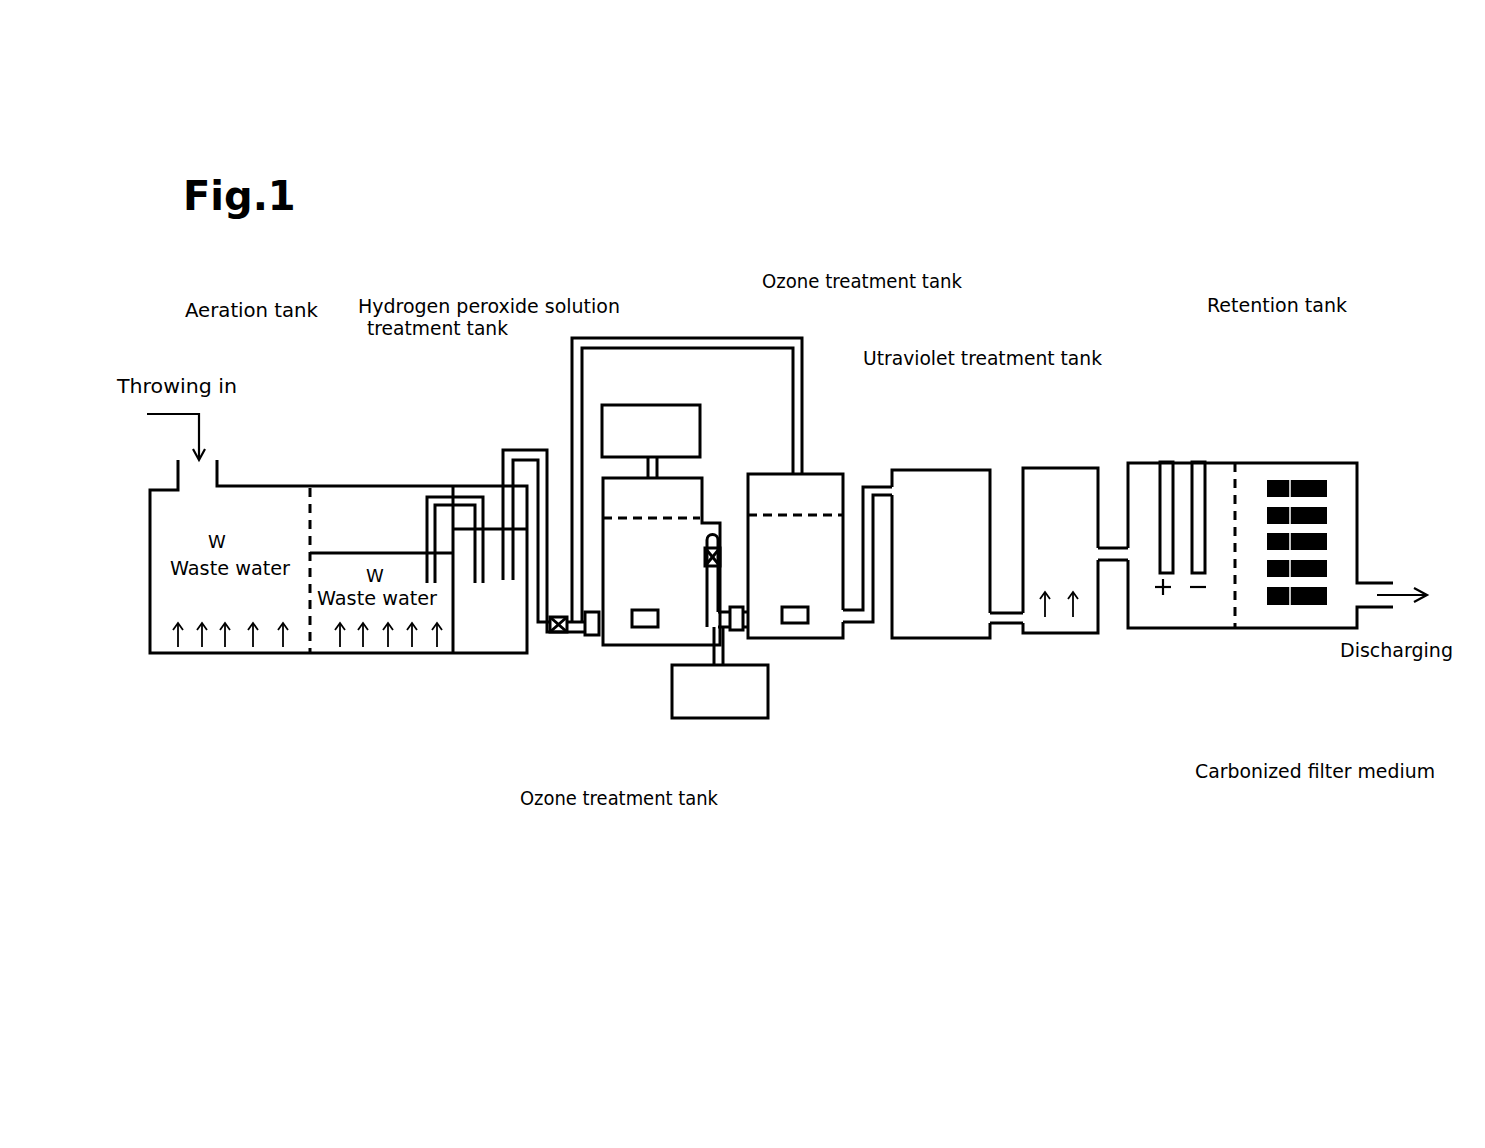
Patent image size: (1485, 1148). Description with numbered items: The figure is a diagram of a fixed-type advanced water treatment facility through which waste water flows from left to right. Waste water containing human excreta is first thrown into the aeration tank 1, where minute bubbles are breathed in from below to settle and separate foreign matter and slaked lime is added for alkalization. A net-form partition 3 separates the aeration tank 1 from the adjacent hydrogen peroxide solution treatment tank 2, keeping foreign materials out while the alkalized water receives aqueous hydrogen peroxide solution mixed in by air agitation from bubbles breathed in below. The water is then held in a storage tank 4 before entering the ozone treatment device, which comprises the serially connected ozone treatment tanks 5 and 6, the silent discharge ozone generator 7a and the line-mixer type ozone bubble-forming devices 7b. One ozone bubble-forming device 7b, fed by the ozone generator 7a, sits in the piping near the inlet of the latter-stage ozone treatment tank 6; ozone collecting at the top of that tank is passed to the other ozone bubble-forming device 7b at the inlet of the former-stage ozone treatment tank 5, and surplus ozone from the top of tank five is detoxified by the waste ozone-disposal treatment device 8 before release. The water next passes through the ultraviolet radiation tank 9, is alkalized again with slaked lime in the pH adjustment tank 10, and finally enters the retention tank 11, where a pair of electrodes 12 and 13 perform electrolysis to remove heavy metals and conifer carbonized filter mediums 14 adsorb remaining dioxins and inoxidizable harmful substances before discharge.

The aeration tank 1 is at (253, 513).
The hydrogen peroxide solution treatment tank 2 is at (405, 518).
The partition 3 is at (312, 617).
The storage tank 4 is at (495, 632).
The ozone treatment tank 5 is at (607, 645).
The ozone treatment tank 6 is at (817, 497).
The ozone generator 7a is at (733, 698).
The ozone bubble-forming device 7b is at (592, 635).
The waste ozone-disposal treatment device 8 is at (700, 427).
The ultraviolet radiation tank 9 is at (945, 533).
The pH adjustment tank 10 is at (1055, 635).
The retention tank 11 is at (1343, 460).
The electrode 12 is at (1166, 462).
The electrode 13 is at (1207, 462).
The carbonized filter medium 14 is at (1265, 628).